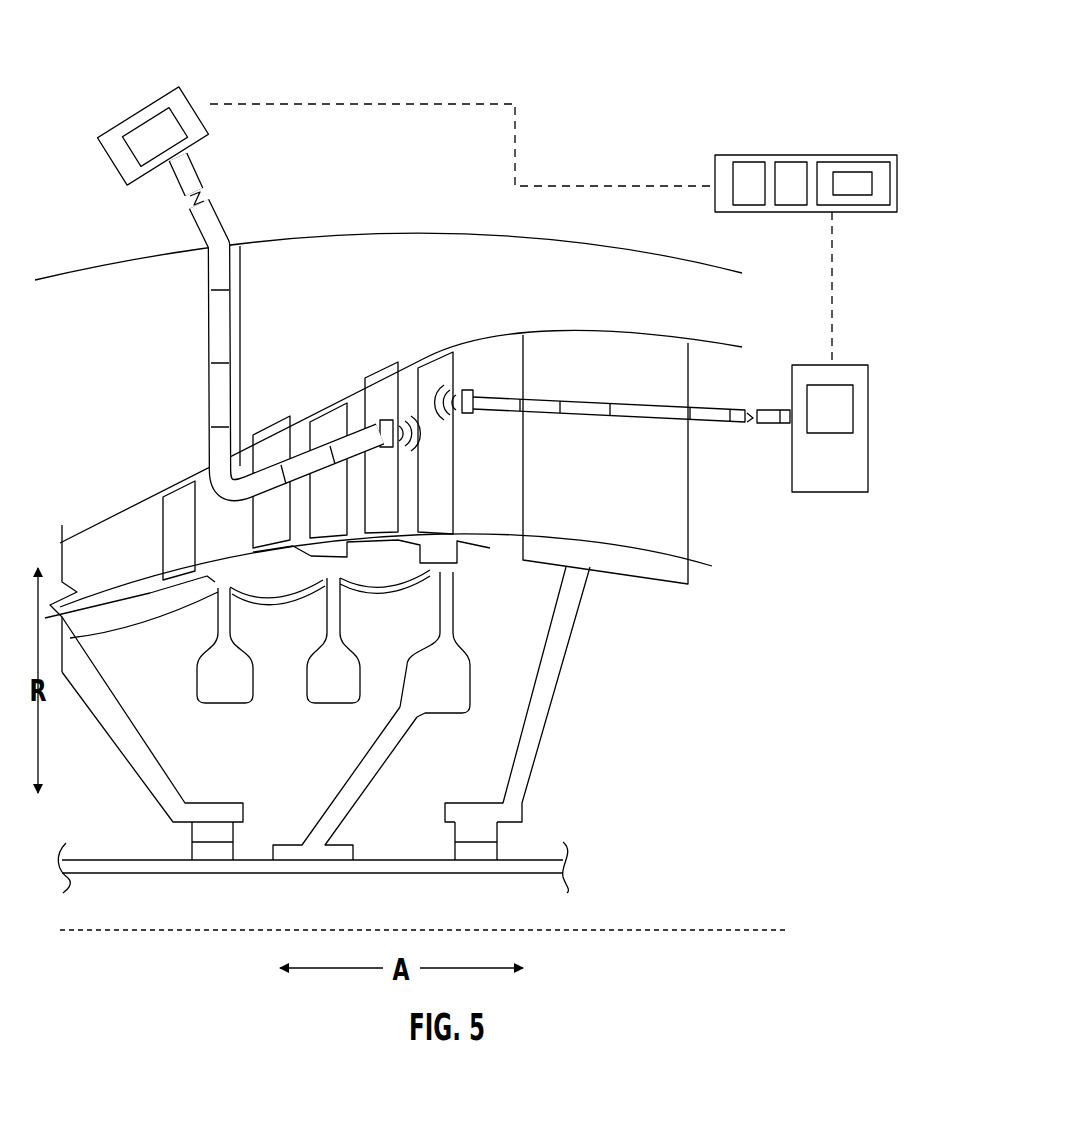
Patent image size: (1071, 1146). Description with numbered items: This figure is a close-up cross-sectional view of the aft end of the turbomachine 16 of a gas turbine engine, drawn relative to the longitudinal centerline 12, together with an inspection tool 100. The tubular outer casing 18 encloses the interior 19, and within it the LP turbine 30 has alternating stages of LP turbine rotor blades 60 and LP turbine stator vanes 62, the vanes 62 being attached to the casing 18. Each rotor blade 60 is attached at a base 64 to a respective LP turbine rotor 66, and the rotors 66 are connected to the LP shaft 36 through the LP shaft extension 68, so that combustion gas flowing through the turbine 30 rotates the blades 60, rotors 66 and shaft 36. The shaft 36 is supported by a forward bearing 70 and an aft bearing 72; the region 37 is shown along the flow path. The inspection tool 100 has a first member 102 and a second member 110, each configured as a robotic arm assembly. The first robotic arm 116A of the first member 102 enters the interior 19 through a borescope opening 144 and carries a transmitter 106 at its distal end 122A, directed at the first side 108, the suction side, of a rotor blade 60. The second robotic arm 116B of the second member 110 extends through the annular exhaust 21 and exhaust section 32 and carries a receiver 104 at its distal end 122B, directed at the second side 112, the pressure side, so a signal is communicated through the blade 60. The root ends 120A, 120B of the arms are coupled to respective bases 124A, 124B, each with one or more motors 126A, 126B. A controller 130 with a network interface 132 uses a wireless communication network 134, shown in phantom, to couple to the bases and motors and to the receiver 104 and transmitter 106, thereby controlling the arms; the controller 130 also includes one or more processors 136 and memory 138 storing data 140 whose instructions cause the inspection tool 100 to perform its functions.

The longitudinal centerline 12 is at (665, 930).
The turbomachine 16 is at (456, 213).
The tubular outer casing 18 is at (334, 240).
The interior 19 is at (301, 257).
The annular exhaust 21 is at (736, 506).
The low pressure (LP) turbine 30 is at (146, 352).
The exhaust section 32 is at (640, 385).
The LP shaft 36 is at (112, 868).
The flow path 37 is at (97, 547).
The LP turbine rotor blade 60 is at (215, 495).
The LP turbine stator vane 62 is at (283, 447).
The base 64 is at (442, 549).
The LP turbine rotor 66 is at (227, 633).
The LP shaft extension 68 is at (375, 767).
The forward bearing 70 is at (235, 843).
The aft bearing 72 is at (500, 842).
The inspection tool 100 is at (707, 71).
The first member 102 is at (216, 82).
The receiver 104 is at (469, 414).
The transmitter 106 is at (387, 447).
The first side 108 is at (403, 489).
The second member 110 is at (880, 355).
The second side 112 is at (562, 488).
The first robotic arm 116A is at (245, 336).
The second robotic arm 116B is at (591, 431).
The root end 120A is at (201, 172).
The root end 120B is at (780, 392).
The distal end 122A is at (351, 436).
The distal end 122B is at (470, 385).
The base 124A is at (187, 89).
The base 124B is at (870, 458).
The motor 126A is at (137, 147).
The motor 126B is at (853, 405).
The controller 130 is at (822, 158).
The network interface 132 is at (747, 168).
The wireless communication network 134 is at (662, 181).
The processor 136 is at (790, 168).
The memory 138 is at (872, 161).
The data 140 is at (868, 184).
The borescope opening 144 is at (207, 338).